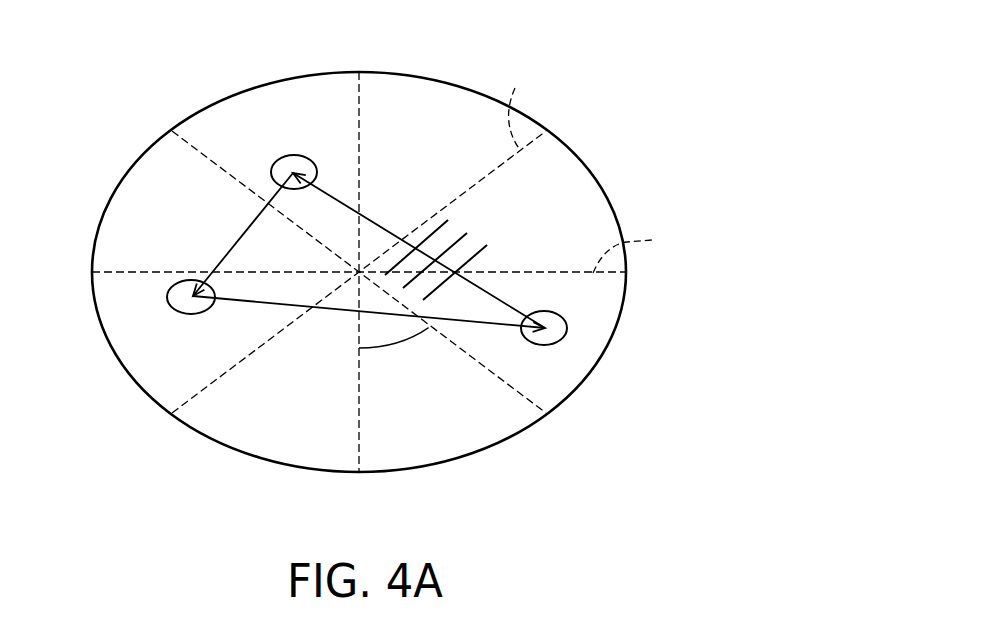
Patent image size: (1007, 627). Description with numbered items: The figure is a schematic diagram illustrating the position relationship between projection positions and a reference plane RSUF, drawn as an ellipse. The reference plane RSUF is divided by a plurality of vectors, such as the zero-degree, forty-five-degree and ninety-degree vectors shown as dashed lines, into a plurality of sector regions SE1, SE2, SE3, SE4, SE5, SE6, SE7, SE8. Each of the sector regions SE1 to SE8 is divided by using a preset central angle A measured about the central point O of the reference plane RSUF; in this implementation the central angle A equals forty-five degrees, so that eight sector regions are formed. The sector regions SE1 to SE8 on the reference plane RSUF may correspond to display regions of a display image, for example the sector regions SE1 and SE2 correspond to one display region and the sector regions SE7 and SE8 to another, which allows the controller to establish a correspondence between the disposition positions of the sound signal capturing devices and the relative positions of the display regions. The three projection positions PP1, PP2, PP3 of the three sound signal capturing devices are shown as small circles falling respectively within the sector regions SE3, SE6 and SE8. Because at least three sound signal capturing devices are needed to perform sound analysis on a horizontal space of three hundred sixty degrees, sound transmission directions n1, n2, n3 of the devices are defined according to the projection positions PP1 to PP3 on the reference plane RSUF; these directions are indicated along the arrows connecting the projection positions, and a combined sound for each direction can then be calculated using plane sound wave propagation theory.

The reference plane RSUF is at (560, 97).
The central point O is at (358, 273).
The central angle A is at (394, 361).
The projection position PP1 is at (556, 330).
The projection position PP2 is at (180, 306).
The projection position PP3 is at (280, 167).
The sound transmission direction n1 is at (382, 226).
The sound transmission direction n2 is at (222, 261).
The sound transmission direction n3 is at (257, 302).
The sector region SE1 is at (430, 108).
The sector region SE2 is at (575, 203).
The sector region SE3 is at (558, 377).
The sector region SE4 is at (490, 417).
The sector region SE5 is at (228, 415).
The sector region SE6 is at (160, 375).
The sector region SE7 is at (143, 202).
The sector region SE8 is at (287, 108).